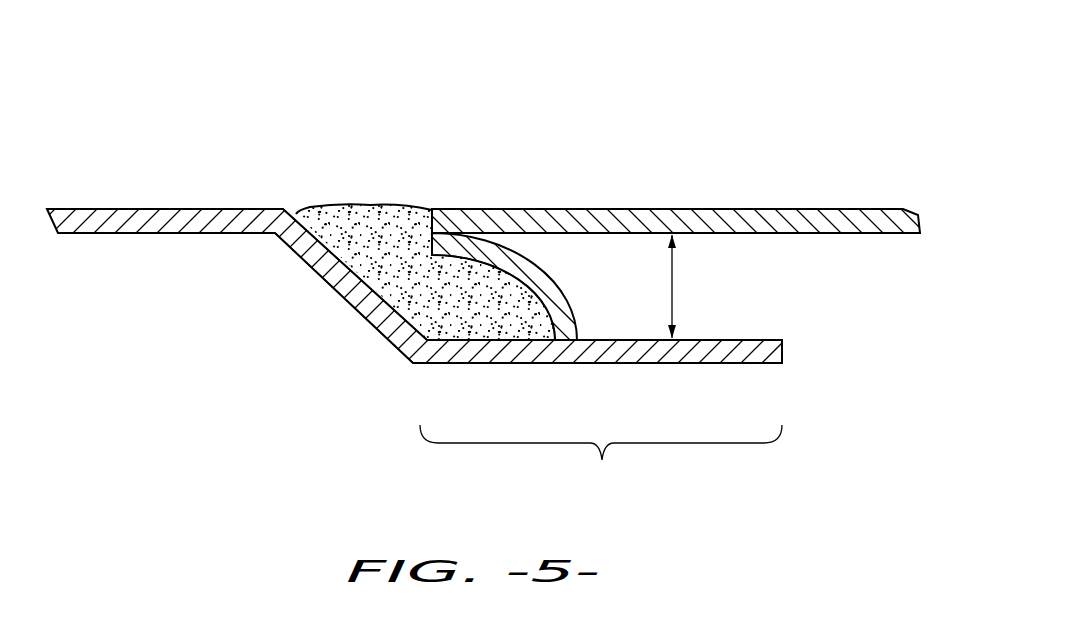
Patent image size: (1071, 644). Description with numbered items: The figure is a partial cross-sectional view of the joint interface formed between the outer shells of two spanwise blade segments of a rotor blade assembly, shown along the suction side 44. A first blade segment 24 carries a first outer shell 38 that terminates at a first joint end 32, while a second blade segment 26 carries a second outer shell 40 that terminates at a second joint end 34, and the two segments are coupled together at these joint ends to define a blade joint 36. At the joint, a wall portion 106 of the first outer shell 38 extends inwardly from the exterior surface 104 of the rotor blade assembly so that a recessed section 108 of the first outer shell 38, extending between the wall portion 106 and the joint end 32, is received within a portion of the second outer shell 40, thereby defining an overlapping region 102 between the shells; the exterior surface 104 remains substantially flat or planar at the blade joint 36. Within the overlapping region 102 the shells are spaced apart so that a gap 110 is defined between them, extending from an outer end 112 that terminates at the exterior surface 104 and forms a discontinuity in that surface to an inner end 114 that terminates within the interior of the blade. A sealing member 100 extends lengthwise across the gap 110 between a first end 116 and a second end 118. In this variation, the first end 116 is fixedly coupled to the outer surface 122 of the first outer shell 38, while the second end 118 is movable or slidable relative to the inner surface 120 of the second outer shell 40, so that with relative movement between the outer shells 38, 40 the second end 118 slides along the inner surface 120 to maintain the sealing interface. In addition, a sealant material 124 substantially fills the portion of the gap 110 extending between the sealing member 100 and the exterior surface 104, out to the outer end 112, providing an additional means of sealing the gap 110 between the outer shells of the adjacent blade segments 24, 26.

The first blade segment 24 is at (118, 132).
The second blade segment 26 is at (807, 138).
The first joint end 32 is at (785, 352).
The second joint end 34 is at (430, 220).
The blade joint 36 is at (327, 118).
The first outer shell 38 is at (235, 205).
The second outer shell 40 is at (807, 210).
The suction side 44 is at (175, 208).
The sealing member 100 is at (559, 264).
The overlapping region 102 is at (601, 464).
The exterior surface 104 is at (605, 210).
The wall portion 106 is at (342, 277).
The recessed section 108 is at (560, 357).
The gap 110 is at (676, 295).
The outer end 112 is at (313, 193).
The inner end 114 is at (828, 274).
The first end 116 is at (580, 344).
The second end 118 is at (462, 242).
The inner surface 120 is at (845, 233).
The outer surface 122 is at (733, 340).
The sealant material 124 is at (373, 240).